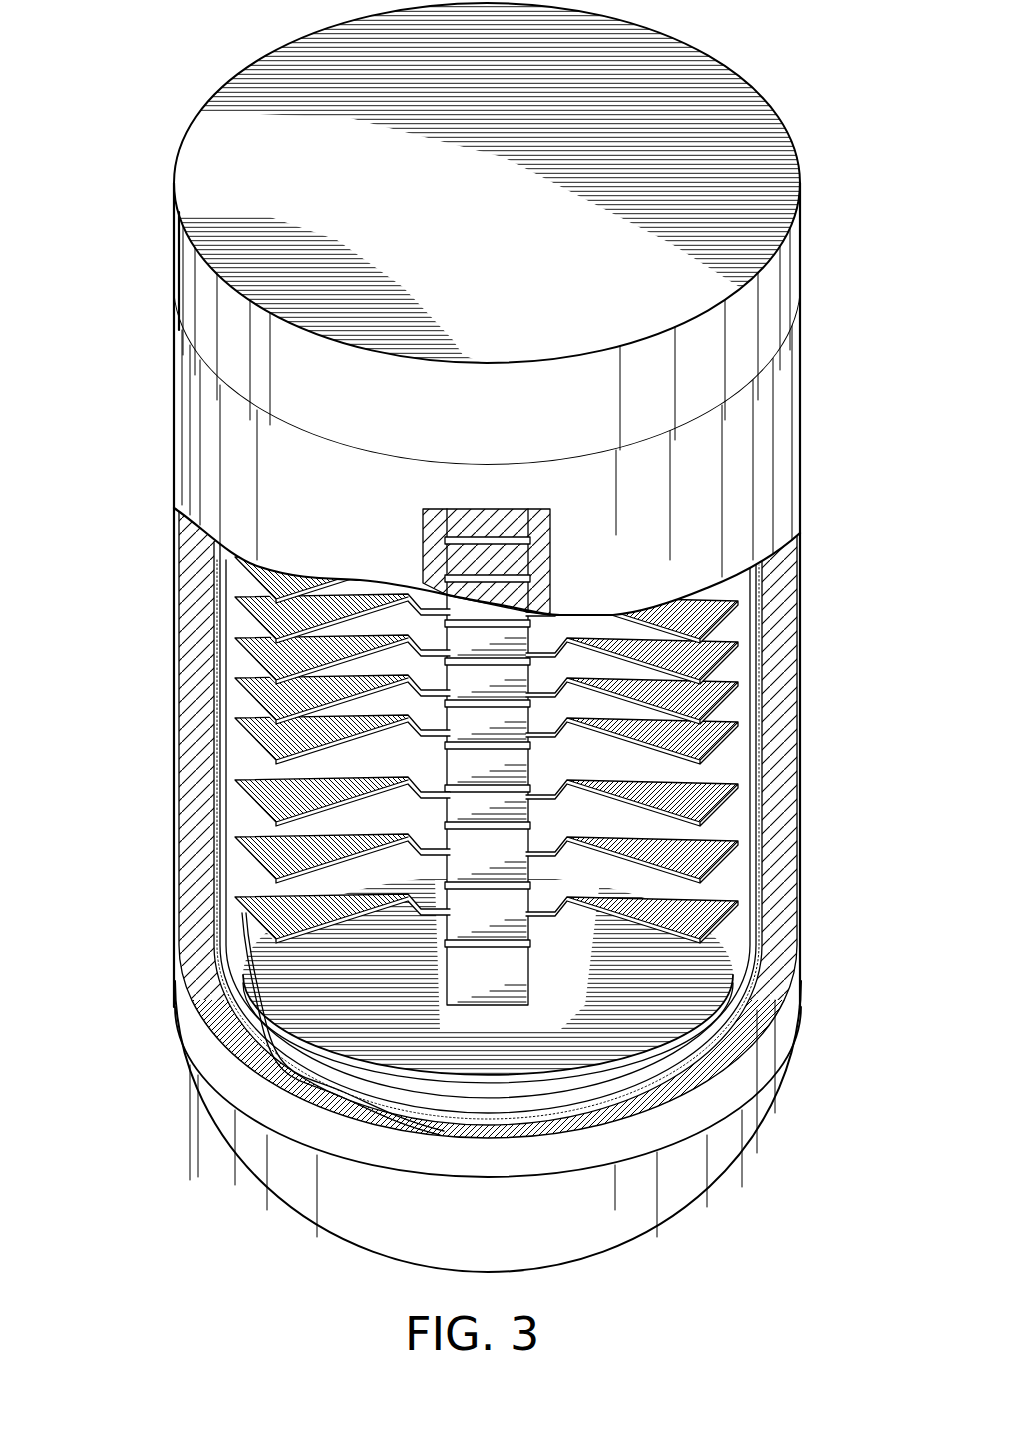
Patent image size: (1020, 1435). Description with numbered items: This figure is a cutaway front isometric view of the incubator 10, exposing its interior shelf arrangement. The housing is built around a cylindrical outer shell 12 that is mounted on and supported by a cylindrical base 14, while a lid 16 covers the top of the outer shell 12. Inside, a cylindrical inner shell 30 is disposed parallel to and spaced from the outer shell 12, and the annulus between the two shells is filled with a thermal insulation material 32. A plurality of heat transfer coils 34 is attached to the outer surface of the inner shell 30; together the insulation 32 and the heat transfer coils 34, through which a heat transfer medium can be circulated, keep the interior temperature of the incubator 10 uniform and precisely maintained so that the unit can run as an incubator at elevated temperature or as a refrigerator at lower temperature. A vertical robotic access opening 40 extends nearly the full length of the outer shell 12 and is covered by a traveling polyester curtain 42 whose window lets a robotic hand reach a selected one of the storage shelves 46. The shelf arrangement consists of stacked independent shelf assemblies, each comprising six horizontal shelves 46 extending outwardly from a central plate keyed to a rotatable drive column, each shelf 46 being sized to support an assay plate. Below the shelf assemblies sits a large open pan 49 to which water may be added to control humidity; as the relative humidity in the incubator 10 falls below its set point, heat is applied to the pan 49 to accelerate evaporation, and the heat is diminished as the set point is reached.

The incubator 10 is at (116, 810).
The outer shell 12 is at (768, 470).
The base 14 is at (610, 1233).
The lid 16 is at (205, 167).
The inner shell 30 is at (760, 683).
The thermal insulation material 32 is at (777, 757).
The heat transfer coil 34 is at (755, 822).
The robotic access opening 40 is at (556, 560).
The traveling polyester curtain 42 is at (433, 530).
The storage shelf 46 is at (273, 908).
The open pan 49 is at (650, 1000).